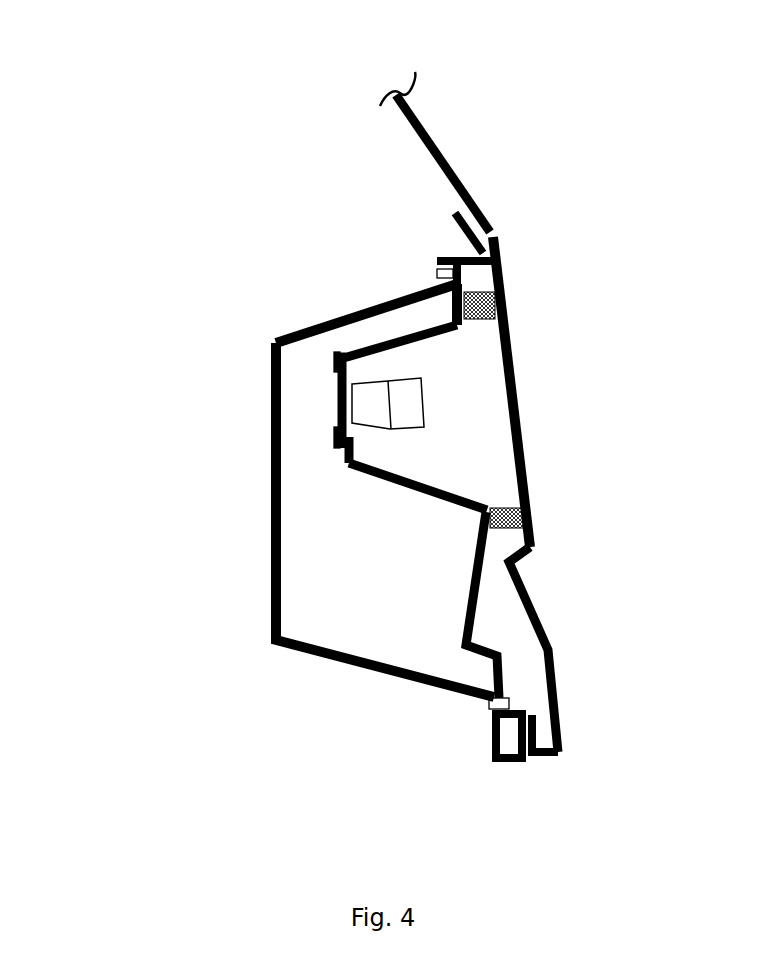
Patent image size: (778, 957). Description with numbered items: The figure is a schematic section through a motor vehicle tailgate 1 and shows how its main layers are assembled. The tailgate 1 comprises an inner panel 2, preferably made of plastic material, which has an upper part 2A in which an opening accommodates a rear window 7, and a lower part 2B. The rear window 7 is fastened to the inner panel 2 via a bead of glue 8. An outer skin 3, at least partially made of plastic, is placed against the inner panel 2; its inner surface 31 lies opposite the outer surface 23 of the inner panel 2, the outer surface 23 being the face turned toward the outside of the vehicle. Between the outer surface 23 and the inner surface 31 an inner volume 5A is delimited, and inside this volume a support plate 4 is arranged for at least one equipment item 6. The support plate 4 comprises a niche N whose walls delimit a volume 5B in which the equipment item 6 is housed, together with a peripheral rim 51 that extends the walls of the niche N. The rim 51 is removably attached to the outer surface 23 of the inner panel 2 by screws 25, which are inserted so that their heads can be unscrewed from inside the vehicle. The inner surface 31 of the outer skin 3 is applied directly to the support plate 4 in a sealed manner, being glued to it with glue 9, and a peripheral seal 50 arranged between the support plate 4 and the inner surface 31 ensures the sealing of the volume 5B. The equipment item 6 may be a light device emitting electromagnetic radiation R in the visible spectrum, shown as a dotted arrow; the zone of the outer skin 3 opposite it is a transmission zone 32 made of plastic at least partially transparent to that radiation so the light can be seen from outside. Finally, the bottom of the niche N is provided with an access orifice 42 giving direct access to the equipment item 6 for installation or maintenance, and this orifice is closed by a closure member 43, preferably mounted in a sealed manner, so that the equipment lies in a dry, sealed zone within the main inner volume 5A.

The motor vehicle tailgate 1 is at (205, 285).
The inner panel 2 is at (330, 667).
The upper part of the inner panel 2A is at (355, 162).
The lower part of the inner panel 2B is at (210, 488).
The outer skin 3 is at (507, 303).
The support plate 4 is at (405, 478).
The inner volume 5A is at (430, 642).
The volume of the niche 5B is at (489, 367).
The equipment item 6 is at (402, 387).
The rear window 7 is at (433, 138).
The bead of glue 8 is at (475, 217).
The glue 9 is at (540, 737).
The outer surface of the inner panel 23 is at (428, 313).
The screws 25 is at (436, 268).
The inner surface of the outer skin 31 is at (518, 590).
The transmission zone 32 is at (542, 468).
The access orifice 42 is at (373, 437).
The closure member 43 is at (342, 402).
The peripheral seal 50 is at (535, 525).
The peripheral rim 51 is at (513, 687).
The electromagnetic radiation R is at (548, 397).
The niche N is at (407, 476).